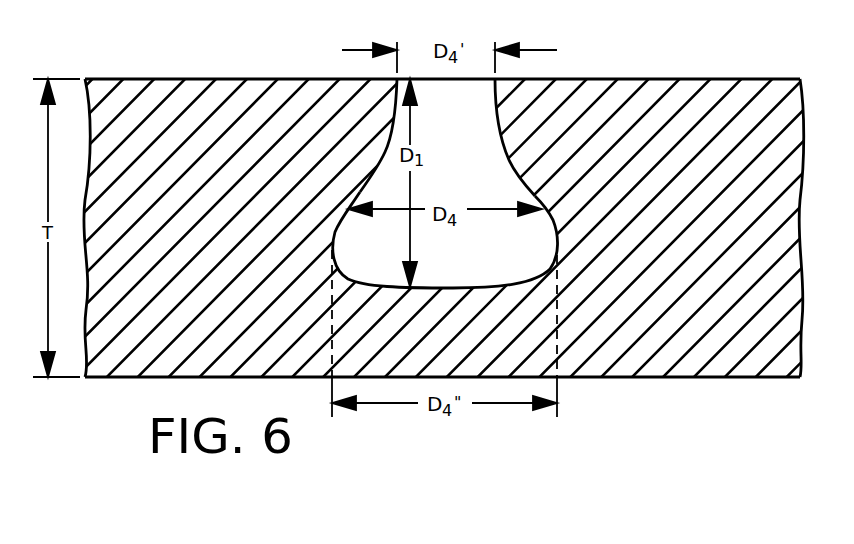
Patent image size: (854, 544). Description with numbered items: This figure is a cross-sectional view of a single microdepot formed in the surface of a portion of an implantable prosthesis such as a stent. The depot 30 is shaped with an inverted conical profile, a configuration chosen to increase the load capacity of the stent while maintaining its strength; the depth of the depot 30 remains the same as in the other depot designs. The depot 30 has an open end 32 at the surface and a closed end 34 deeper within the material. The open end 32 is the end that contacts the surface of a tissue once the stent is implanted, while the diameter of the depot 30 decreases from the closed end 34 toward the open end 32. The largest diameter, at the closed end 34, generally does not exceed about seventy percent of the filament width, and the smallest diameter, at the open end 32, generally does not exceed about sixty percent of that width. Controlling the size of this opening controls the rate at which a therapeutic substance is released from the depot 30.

The depot 30 is at (445, 183).
The open end 32 is at (433, 79).
The closed end 34 is at (393, 282).